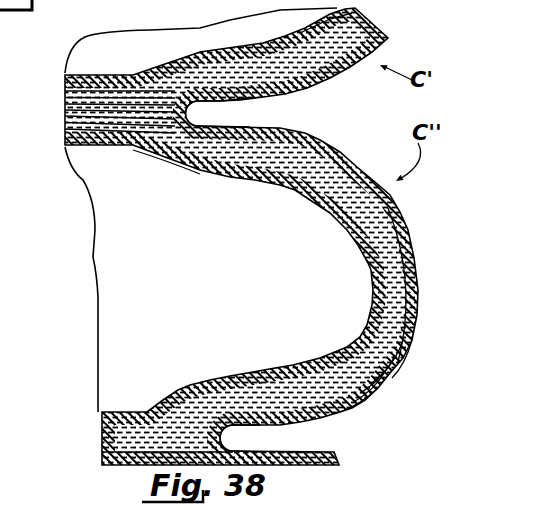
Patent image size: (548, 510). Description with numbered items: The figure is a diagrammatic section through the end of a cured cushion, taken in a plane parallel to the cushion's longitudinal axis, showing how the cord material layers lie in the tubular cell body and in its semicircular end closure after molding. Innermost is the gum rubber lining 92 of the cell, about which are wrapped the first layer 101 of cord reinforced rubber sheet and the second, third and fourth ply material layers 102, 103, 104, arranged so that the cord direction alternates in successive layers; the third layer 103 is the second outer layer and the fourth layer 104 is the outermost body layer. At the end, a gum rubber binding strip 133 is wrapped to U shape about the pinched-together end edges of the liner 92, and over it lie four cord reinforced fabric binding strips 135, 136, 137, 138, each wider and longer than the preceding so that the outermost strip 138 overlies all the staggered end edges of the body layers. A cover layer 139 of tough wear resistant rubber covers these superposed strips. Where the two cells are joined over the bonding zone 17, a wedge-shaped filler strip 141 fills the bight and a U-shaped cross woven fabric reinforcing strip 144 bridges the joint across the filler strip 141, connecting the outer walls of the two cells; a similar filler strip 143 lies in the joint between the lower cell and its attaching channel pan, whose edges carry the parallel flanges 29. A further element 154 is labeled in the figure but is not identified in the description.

The zone of connection 17 is at (300, 118).
The lining 92 is at (125, 75).
The first layer 101 is at (62, 90).
The second ply material layer 102 is at (62, 96).
The third ply material layer 103 is at (62, 101).
The fourth ply material layer 104 is at (62, 108).
The filler strip 141 is at (163, 156).
The reinforcing strip 144 is at (239, 99).
The cover layer 139 is at (353, 75).
The binding strip 133 is at (408, 232).
The first fabric binding strip 135 is at (373, 383).
The second fabric binding strip 136 is at (360, 393).
The third fabric binding strip 137 is at (352, 403).
The fourth fabric binding strip 138 is at (340, 412).
The filler strip 143 is at (222, 438).
The adjacent element 154 is at (15, 300).
The flanges 29 is at (11, 333).